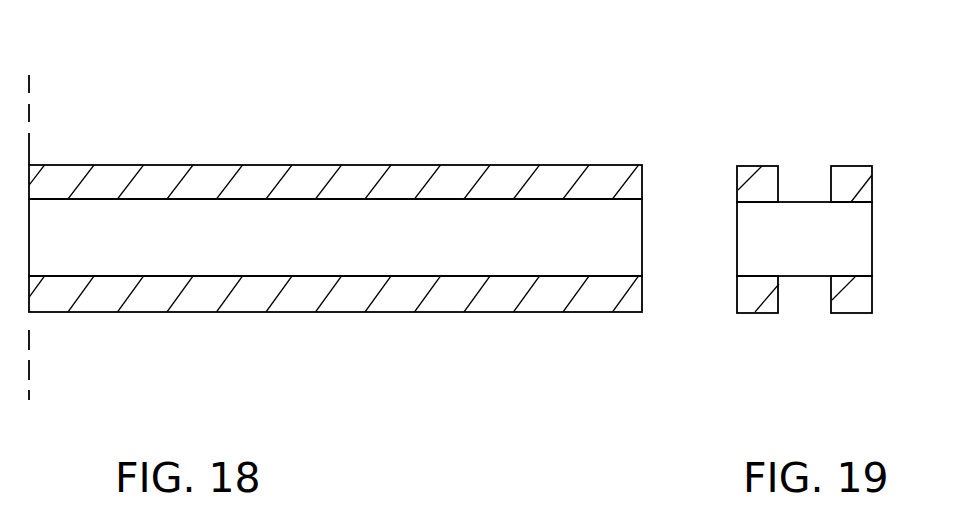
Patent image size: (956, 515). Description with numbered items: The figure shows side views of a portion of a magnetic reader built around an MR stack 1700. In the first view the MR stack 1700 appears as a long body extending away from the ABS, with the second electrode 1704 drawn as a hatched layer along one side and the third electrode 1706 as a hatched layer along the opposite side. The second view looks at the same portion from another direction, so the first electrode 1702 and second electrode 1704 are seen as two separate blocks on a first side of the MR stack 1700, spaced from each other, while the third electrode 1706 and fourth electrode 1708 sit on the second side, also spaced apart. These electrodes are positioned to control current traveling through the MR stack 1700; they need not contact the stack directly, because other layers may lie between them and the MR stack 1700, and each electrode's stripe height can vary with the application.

In FIG. 18, the MR stack 1700 is at (428, 225).
In FIG. 19, the MR stack 1700 is at (821, 252).
In FIG. 19, the first electrode 1702 is at (849, 173).
In FIG. 18, the second electrode 1704 is at (313, 187).
In FIG. 19, the second electrode 1704 is at (760, 185).
In FIG. 18, the third electrode 1706 is at (360, 290).
In FIG. 19, the third electrode 1706 is at (752, 296).
In FIG. 19, the fourth electrode 1708 is at (861, 305).
In FIG. 18, the air bearing surface ABS is at (29, 331).